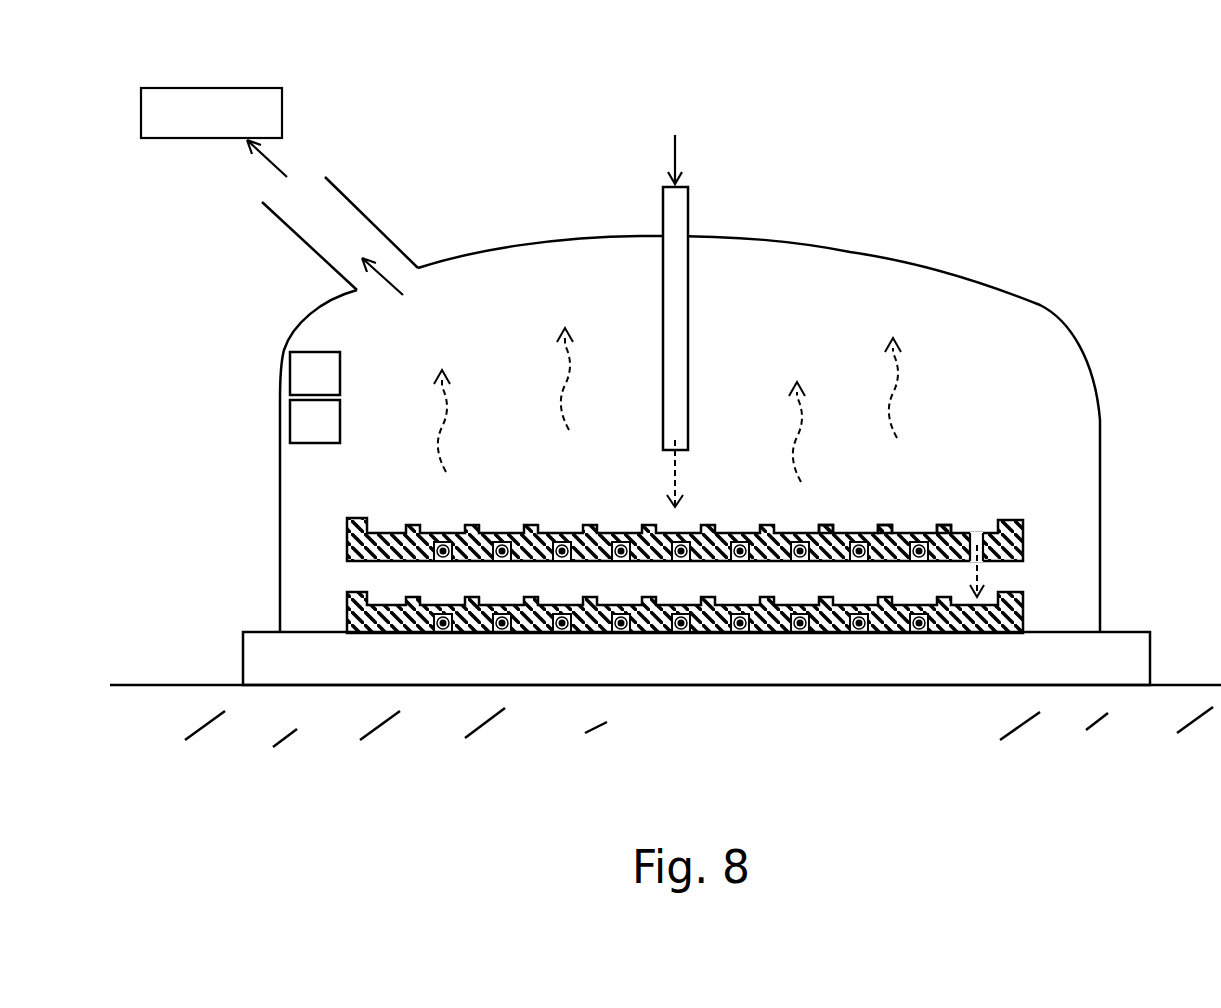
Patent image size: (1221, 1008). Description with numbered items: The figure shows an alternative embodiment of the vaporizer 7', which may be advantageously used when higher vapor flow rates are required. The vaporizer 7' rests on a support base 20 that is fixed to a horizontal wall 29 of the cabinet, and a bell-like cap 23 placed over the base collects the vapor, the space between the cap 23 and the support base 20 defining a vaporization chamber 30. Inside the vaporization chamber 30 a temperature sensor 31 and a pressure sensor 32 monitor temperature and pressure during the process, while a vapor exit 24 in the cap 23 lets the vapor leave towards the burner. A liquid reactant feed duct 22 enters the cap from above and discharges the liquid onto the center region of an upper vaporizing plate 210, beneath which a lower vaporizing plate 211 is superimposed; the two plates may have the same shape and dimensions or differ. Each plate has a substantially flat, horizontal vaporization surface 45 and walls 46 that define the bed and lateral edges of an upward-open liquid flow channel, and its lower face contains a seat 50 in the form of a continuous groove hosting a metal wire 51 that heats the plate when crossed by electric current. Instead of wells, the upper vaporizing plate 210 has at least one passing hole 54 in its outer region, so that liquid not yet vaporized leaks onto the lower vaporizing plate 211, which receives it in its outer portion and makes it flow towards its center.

The vaporizer 7' is at (619, 129).
The support base 20 is at (647, 677).
The liquid reactant feed duct 22 is at (688, 359).
The bell-like cap 23 is at (767, 240).
The vapor exit 24 is at (357, 252).
The horizontal wall 29 is at (162, 668).
The vaporization chamber 30 is at (983, 350).
The temperature sensor 31 is at (290, 378).
The pressure sensor 32 is at (290, 422).
The upper vaporizing plate 210 is at (347, 545).
The lower vaporizing plate 211 is at (347, 620).
The vaporization surface 45 is at (923, 518).
The walls 46 is at (828, 508).
The seat 50 is at (928, 652).
The metal wire 51 is at (852, 634).
The passing hole 54 is at (978, 518).